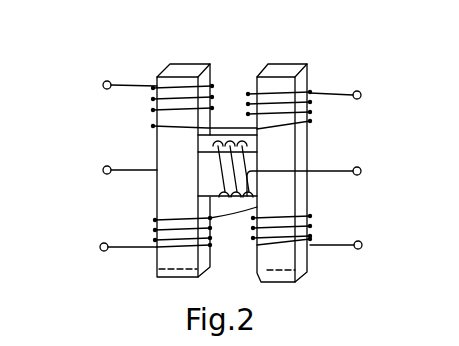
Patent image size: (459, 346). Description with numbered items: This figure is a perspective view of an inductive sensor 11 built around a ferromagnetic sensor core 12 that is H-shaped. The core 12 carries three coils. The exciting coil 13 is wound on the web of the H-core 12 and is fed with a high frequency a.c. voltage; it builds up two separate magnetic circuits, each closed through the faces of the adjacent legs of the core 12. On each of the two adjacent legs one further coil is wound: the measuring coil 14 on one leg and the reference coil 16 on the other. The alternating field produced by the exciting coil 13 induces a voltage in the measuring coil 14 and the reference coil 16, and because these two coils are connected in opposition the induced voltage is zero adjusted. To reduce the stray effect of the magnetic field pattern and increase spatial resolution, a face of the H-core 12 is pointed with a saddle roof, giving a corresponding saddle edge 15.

The sensor 11 is at (247, 174).
The sensor core 12 is at (307, 150).
The exciting coil 13 is at (209, 150).
The measuring coil 14 is at (155, 238).
The saddle edge 15 is at (177, 279).
The reference coil 16 is at (153, 100).